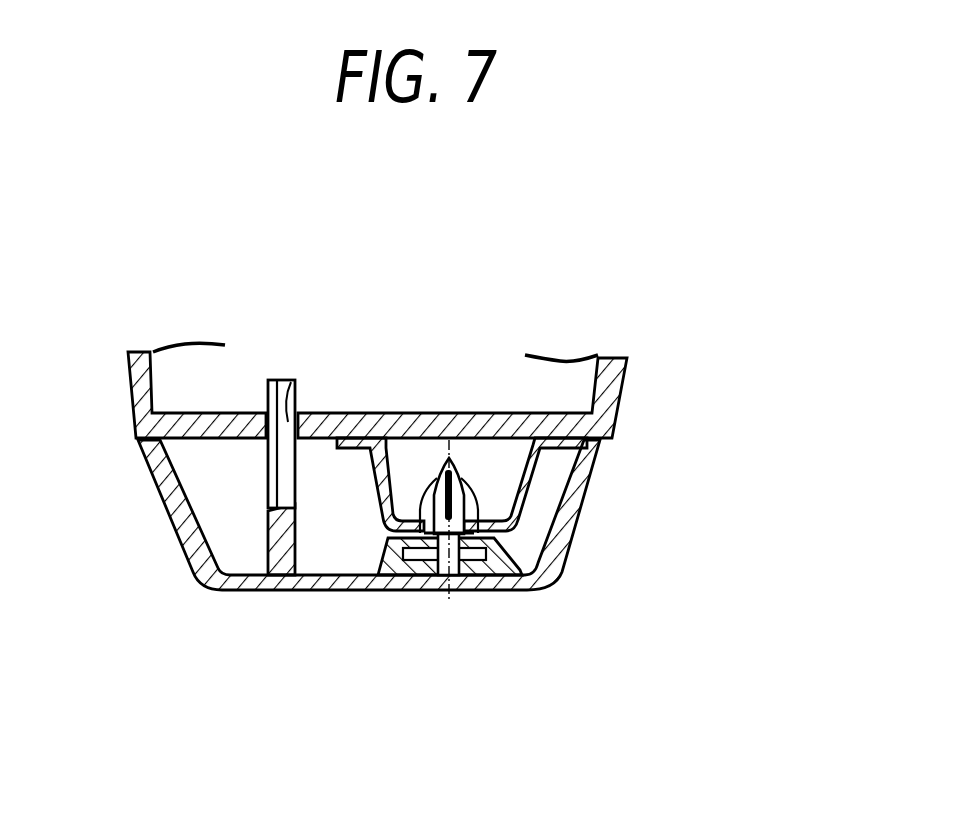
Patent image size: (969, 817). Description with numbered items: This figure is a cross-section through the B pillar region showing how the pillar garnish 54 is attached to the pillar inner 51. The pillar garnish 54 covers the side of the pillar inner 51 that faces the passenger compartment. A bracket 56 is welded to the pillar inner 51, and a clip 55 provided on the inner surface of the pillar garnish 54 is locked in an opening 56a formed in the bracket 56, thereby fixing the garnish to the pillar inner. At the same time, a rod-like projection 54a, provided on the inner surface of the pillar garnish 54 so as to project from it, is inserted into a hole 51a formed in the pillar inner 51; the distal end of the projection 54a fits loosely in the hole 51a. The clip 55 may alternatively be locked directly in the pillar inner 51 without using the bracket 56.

The pillar inner 51 is at (630, 392).
The hole 51a is at (288, 380).
The pillar garnish 54 is at (203, 592).
The rod-like projection 54a is at (268, 393).
The clip 55 is at (439, 490).
The bracket 56 is at (367, 502).
The opening 56a is at (456, 560).